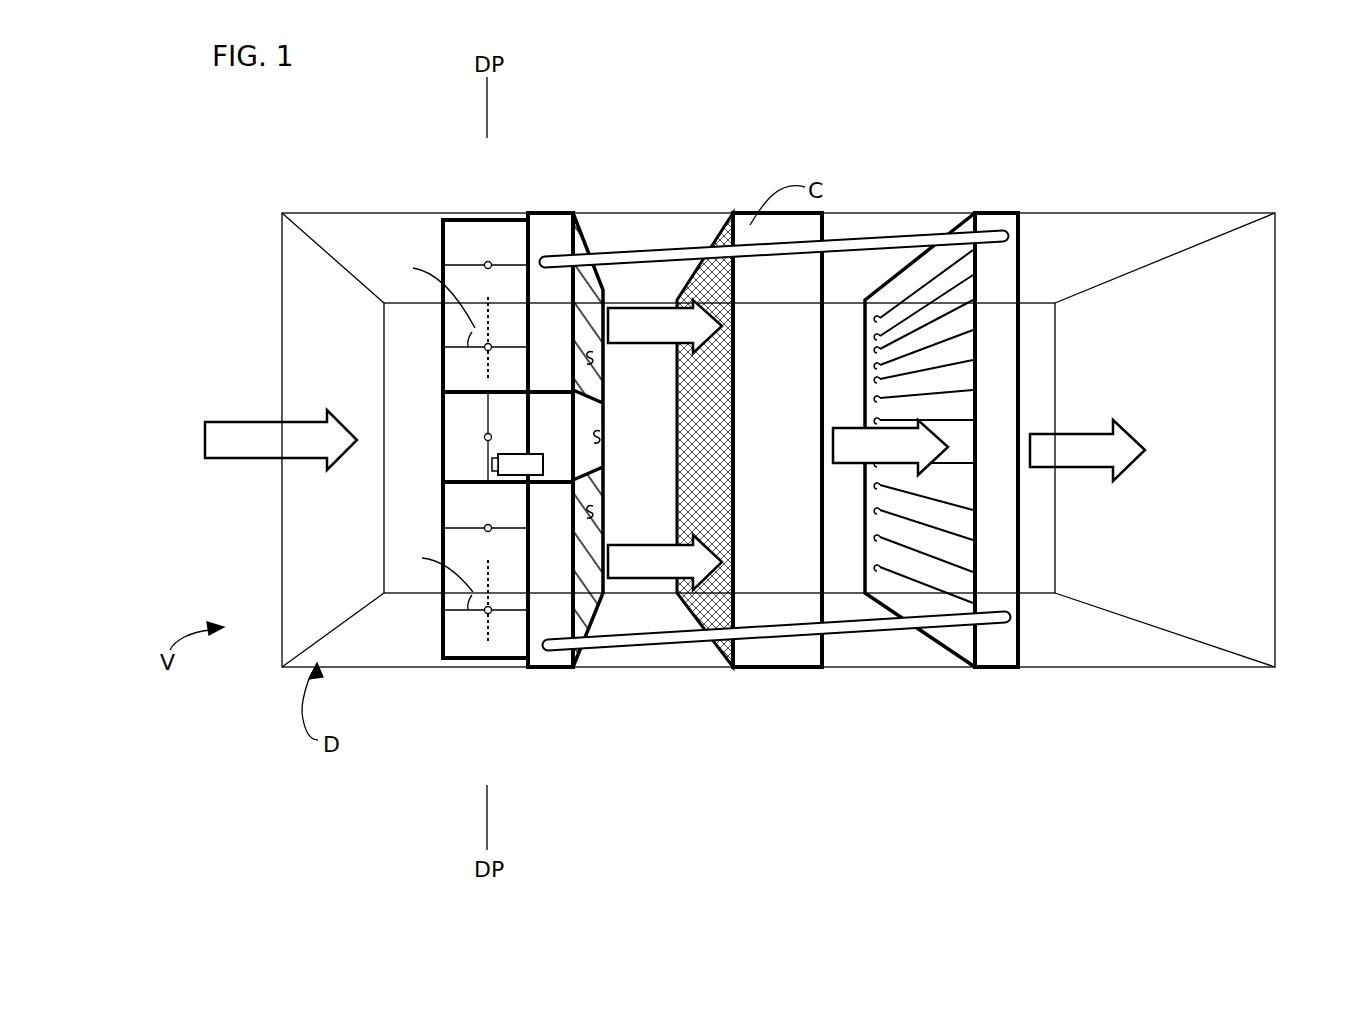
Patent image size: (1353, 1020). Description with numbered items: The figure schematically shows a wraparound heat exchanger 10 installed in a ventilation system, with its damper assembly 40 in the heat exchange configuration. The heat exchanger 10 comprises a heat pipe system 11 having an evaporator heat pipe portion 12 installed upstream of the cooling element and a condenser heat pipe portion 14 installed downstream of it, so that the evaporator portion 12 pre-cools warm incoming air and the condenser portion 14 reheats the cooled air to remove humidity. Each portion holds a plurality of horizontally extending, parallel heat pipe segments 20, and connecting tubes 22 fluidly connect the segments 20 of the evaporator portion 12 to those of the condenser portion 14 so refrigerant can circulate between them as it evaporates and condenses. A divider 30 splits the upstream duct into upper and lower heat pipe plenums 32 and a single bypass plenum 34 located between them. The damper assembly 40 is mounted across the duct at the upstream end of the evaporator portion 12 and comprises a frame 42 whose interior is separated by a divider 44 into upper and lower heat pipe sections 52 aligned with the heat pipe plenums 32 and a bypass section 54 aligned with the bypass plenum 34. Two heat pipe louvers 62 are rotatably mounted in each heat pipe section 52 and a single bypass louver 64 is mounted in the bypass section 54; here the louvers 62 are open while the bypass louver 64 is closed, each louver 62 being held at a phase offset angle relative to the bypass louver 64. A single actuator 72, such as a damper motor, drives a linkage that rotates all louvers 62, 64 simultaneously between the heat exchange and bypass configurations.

The heat exchanger 10 is at (940, 860).
The heat pipe system 11 is at (1032, 702).
The evaporator heat pipe portion 12 is at (542, 668).
The condenser heat pipe portion 14 is at (1025, 250).
The heat pipe segments 20 is at (598, 300).
The connecting tubes 22 is at (875, 237).
The divider 30 is at (555, 482).
The heat pipe plenum 32 is at (603, 362).
The bypass plenum 34 is at (603, 438).
The damper assembly 40 is at (458, 676).
The frame 42 is at (462, 220).
The divider 44 is at (465, 392).
The heat pipe sections 52 is at (443, 338).
The bypass section 54 is at (443, 438).
The heat pipe louver 62 is at (513, 262).
The bypass louver 64 is at (490, 430).
The actuator 72 is at (543, 460).